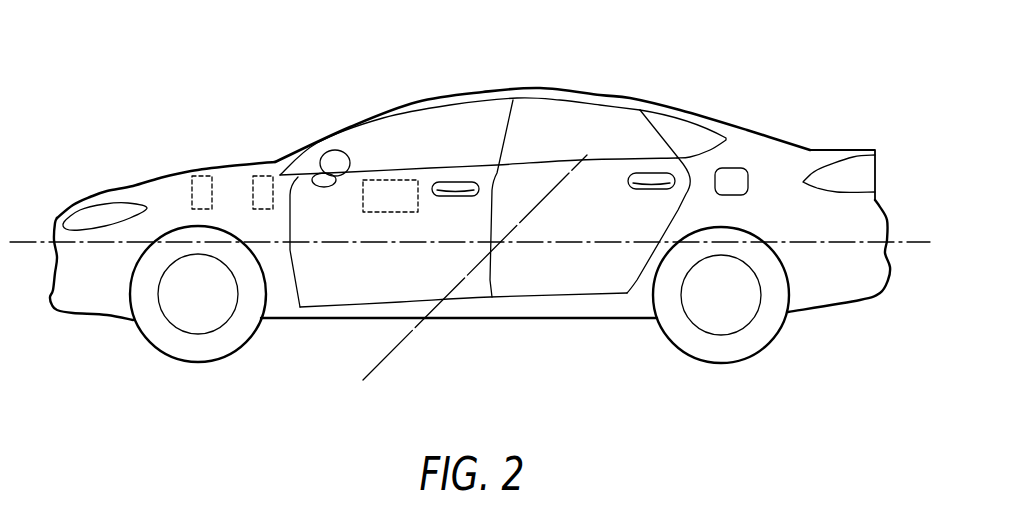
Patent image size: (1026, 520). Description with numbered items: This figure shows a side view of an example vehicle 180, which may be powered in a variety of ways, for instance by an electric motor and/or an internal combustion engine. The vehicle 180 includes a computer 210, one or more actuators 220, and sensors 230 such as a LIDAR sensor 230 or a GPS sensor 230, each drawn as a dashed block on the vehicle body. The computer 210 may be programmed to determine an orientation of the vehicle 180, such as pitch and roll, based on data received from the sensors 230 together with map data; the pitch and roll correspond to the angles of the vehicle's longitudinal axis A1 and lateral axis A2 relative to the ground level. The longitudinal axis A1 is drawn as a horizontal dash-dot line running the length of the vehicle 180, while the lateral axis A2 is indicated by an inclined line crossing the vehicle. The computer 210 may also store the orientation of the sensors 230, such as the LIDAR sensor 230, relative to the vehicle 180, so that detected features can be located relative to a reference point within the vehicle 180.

The vehicle 180 is at (563, 90).
The computer 210 is at (262, 177).
The actuator 220 is at (193, 177).
The sensor 230 is at (388, 180).
The longitudinal axis A1 is at (24, 242).
The lateral axis A2 is at (378, 367).